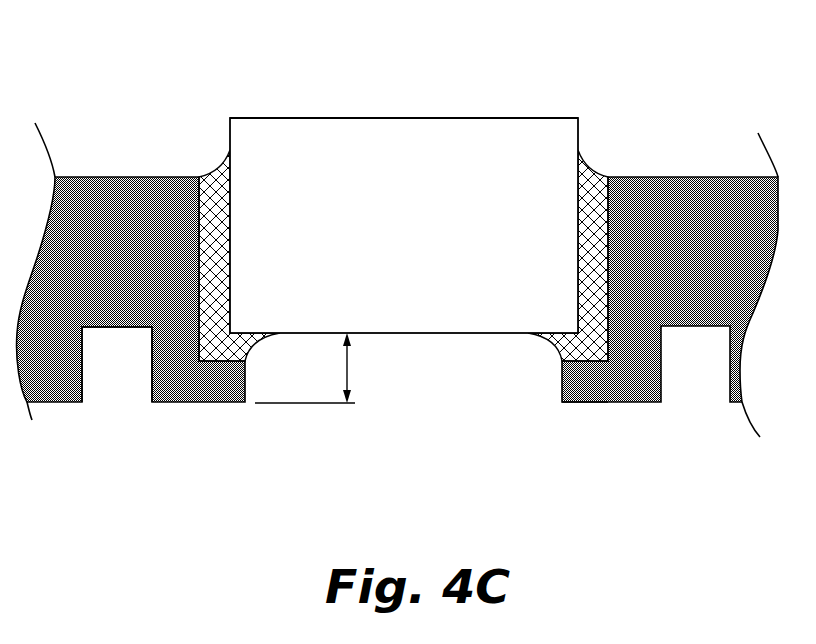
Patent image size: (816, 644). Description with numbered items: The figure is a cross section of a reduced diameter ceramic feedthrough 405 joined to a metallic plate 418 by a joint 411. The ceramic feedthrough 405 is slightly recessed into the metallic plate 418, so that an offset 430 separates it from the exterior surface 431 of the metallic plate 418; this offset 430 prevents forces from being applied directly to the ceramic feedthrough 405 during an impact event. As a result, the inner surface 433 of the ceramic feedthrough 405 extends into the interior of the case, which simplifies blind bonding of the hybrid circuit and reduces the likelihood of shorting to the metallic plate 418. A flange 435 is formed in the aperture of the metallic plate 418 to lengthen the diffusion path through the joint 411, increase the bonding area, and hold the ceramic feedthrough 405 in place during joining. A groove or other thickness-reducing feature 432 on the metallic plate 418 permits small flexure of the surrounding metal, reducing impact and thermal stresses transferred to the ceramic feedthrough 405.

The ceramic feedthrough 405 is at (421, 236).
The joint 411 is at (215, 162).
The metallic plate 418 is at (658, 177).
The offset 430 is at (347, 370).
The exterior surface 431 is at (208, 402).
The thickness-reducing feature 432 is at (110, 392).
The inner surface 433 is at (378, 118).
The flange 435 is at (562, 410).